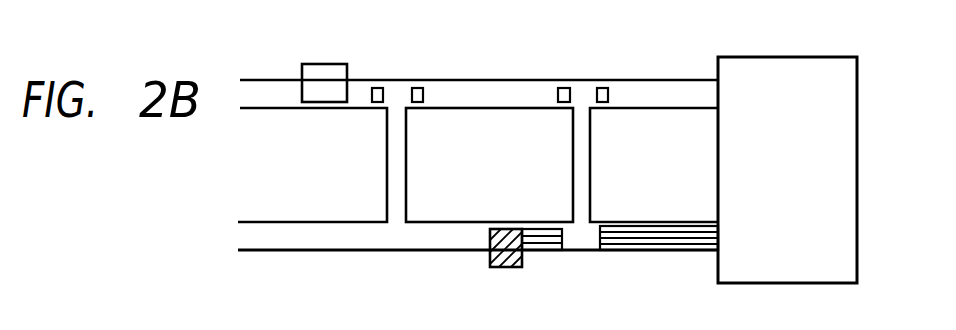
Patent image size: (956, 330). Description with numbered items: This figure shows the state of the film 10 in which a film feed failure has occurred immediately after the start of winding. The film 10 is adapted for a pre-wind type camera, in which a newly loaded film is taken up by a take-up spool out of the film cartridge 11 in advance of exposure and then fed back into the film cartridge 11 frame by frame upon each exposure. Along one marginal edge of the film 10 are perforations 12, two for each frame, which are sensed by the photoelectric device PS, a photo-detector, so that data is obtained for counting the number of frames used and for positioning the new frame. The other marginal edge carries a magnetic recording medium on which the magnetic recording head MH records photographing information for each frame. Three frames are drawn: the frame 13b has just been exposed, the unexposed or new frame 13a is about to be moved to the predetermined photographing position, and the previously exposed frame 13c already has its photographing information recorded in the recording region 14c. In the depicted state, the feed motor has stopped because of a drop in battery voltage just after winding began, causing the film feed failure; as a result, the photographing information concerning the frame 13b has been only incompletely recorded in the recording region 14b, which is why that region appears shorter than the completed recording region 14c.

The film 10 is at (478, 277).
The film cartridge 11 is at (787, 145).
The perforations 12 is at (488, 70).
The unexposed frame 13a is at (312, 131).
The frame 13b is at (489, 132).
The previously exposed frame 13c is at (654, 131).
The photoelectric device PS is at (324, 58).
The magnetic recording head MH is at (505, 275).
The recording region 14b is at (549, 268).
The recording region 14c is at (659, 274).